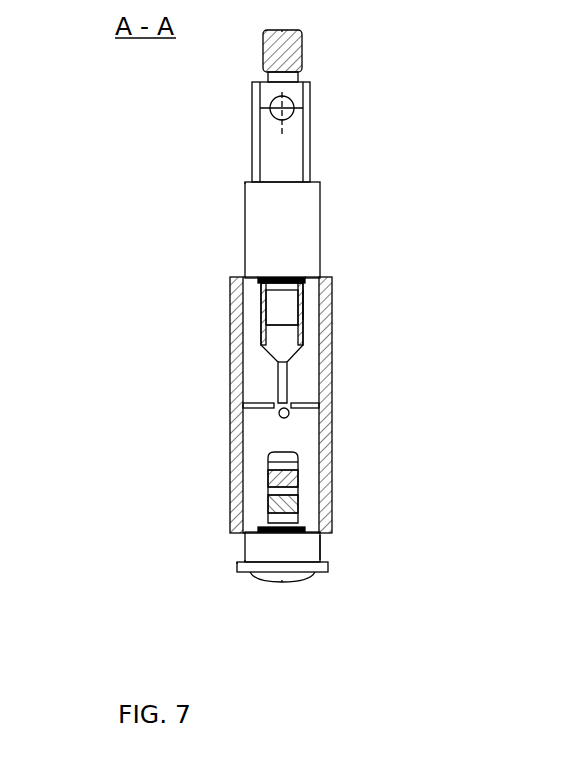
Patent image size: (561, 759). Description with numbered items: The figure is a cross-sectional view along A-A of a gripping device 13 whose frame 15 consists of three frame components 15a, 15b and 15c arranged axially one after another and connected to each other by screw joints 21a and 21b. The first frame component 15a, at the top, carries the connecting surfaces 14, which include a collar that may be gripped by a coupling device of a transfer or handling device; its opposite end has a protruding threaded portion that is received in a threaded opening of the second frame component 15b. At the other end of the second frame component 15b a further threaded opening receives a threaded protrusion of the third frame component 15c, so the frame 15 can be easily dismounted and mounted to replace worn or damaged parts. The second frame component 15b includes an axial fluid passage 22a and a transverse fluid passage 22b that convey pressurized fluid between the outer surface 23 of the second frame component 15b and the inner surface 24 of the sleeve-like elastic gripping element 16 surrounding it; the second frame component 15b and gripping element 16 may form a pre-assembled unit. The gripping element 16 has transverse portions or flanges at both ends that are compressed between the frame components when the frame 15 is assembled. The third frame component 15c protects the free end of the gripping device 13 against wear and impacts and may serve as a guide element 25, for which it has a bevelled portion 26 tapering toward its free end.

The gripping device 13 is at (103, 268).
The connecting surfaces 14 is at (287, 48).
The frame 15 is at (170, 335).
The first frame component 15a is at (337, 222).
The second frame component 15b is at (306, 320).
The third frame component 15c is at (374, 553).
The gripping element 16 is at (237, 455).
The screw joint 21a is at (242, 318).
The screw joint 21b is at (268, 500).
The axial fluid passage 22a is at (300, 366).
The transverse fluid passage 22b is at (300, 414).
The outer surface 23 is at (323, 385).
The inner surface 24 is at (245, 425).
The guide element 25 is at (203, 568).
The bevelled portion 26 is at (242, 572).